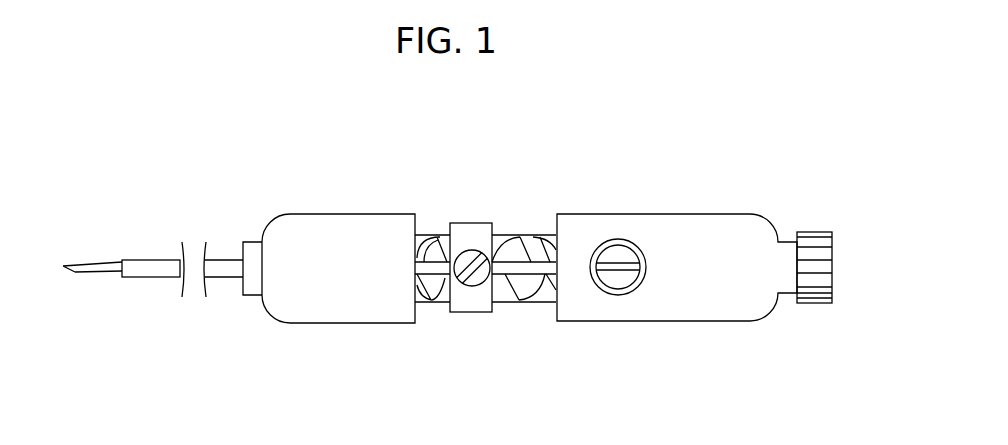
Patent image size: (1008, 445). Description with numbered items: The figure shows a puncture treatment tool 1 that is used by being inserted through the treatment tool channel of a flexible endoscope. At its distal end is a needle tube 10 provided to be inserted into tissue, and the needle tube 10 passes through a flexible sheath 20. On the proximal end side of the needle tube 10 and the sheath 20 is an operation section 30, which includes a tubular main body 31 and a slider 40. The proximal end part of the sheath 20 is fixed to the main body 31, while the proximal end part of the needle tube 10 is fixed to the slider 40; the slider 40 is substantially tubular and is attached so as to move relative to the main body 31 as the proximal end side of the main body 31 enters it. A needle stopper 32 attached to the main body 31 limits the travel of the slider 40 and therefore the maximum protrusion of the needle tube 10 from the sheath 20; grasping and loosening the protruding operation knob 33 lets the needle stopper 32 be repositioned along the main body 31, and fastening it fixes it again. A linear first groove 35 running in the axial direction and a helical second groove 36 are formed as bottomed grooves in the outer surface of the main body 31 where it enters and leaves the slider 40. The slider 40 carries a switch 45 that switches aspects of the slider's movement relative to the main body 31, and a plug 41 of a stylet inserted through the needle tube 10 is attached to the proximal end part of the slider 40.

The puncture treatment tool 1 is at (699, 165).
The needle tube 10 is at (105, 268).
The flexible sheath 20 is at (225, 265).
The operation section 30 is at (510, 187).
The main body 31 is at (424, 315).
The needle stopper 32 is at (473, 320).
The operation knob 33 is at (470, 250).
The first groove 35 is at (533, 268).
The second groove 36 is at (502, 255).
The slider 40 is at (702, 312).
The plug 41 is at (813, 243).
The switch 45 is at (641, 234).